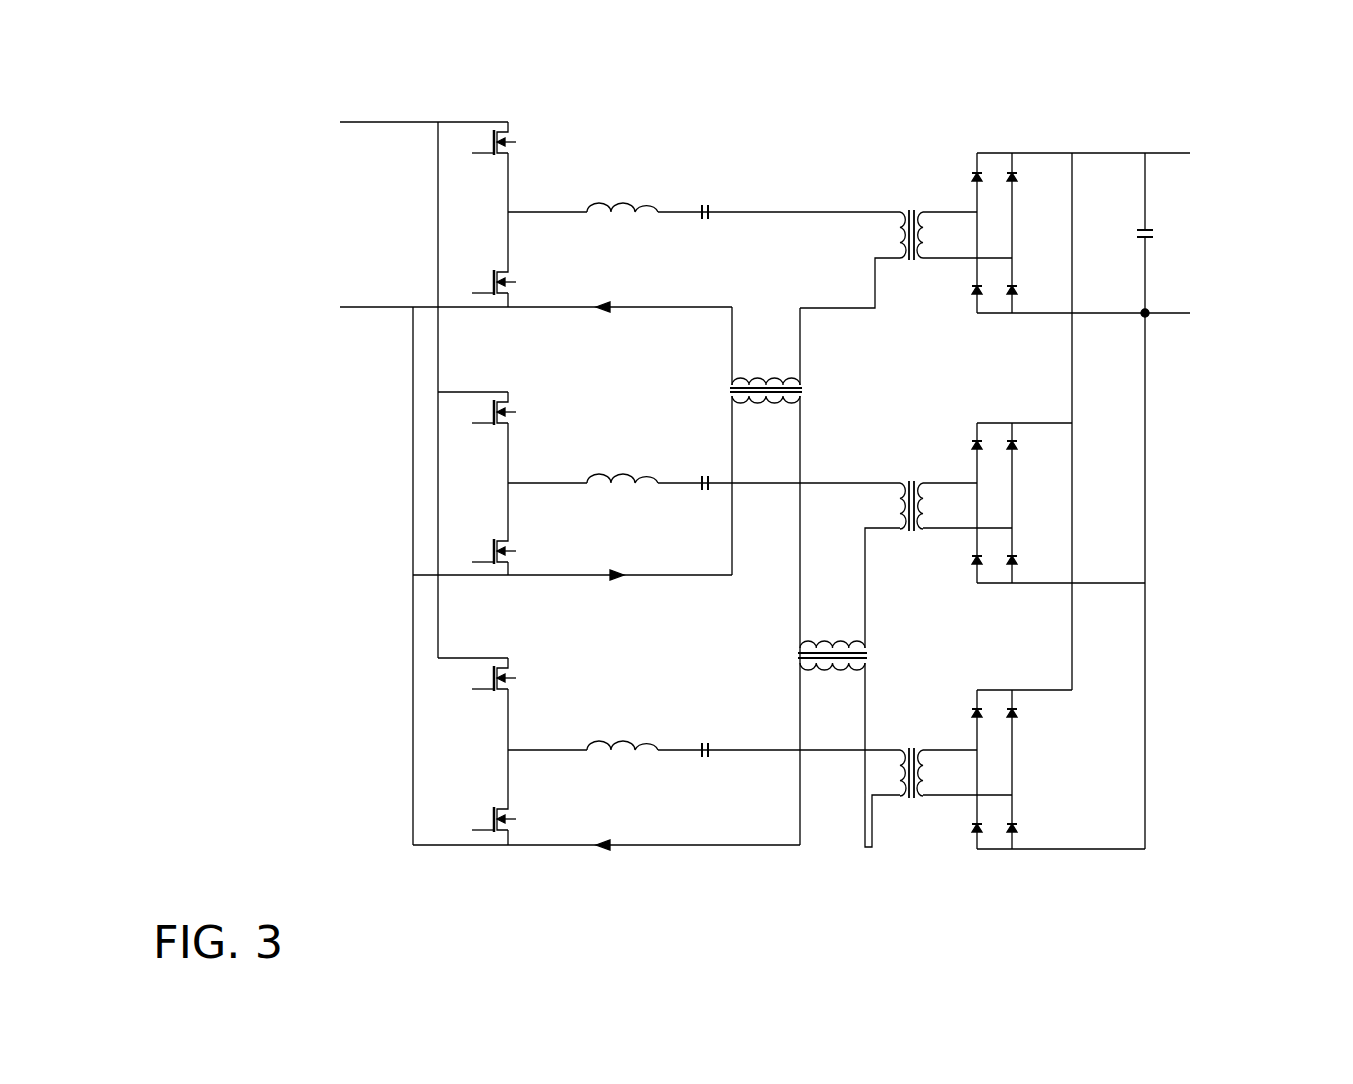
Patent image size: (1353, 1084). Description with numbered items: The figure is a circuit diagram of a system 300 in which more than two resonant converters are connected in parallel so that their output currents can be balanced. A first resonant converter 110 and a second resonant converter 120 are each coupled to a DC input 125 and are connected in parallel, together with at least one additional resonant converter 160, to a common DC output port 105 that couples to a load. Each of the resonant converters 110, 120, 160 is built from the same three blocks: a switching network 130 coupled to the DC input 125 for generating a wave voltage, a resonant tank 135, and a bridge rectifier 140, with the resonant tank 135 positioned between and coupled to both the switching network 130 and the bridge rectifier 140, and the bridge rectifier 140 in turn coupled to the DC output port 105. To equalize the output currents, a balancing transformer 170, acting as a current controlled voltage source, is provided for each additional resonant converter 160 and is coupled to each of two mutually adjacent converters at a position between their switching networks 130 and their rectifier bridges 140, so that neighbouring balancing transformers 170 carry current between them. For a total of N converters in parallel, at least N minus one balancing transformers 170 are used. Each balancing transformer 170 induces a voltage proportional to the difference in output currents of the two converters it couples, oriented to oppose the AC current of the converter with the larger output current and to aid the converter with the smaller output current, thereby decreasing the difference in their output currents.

The system 300 is at (294, 78).
The DC output port 105 is at (1190, 213).
The first resonant converter 110 is at (323, 262).
The second resonant converter 120 is at (310, 523).
The DC input 125 is at (363, 187).
The switching network 130 is at (468, 795).
The resonant tank 135 is at (703, 815).
The bridge rectifier 140 is at (1002, 765).
The additional resonant converter 160 is at (390, 802).
The balancing transformer 170 is at (829, 725).